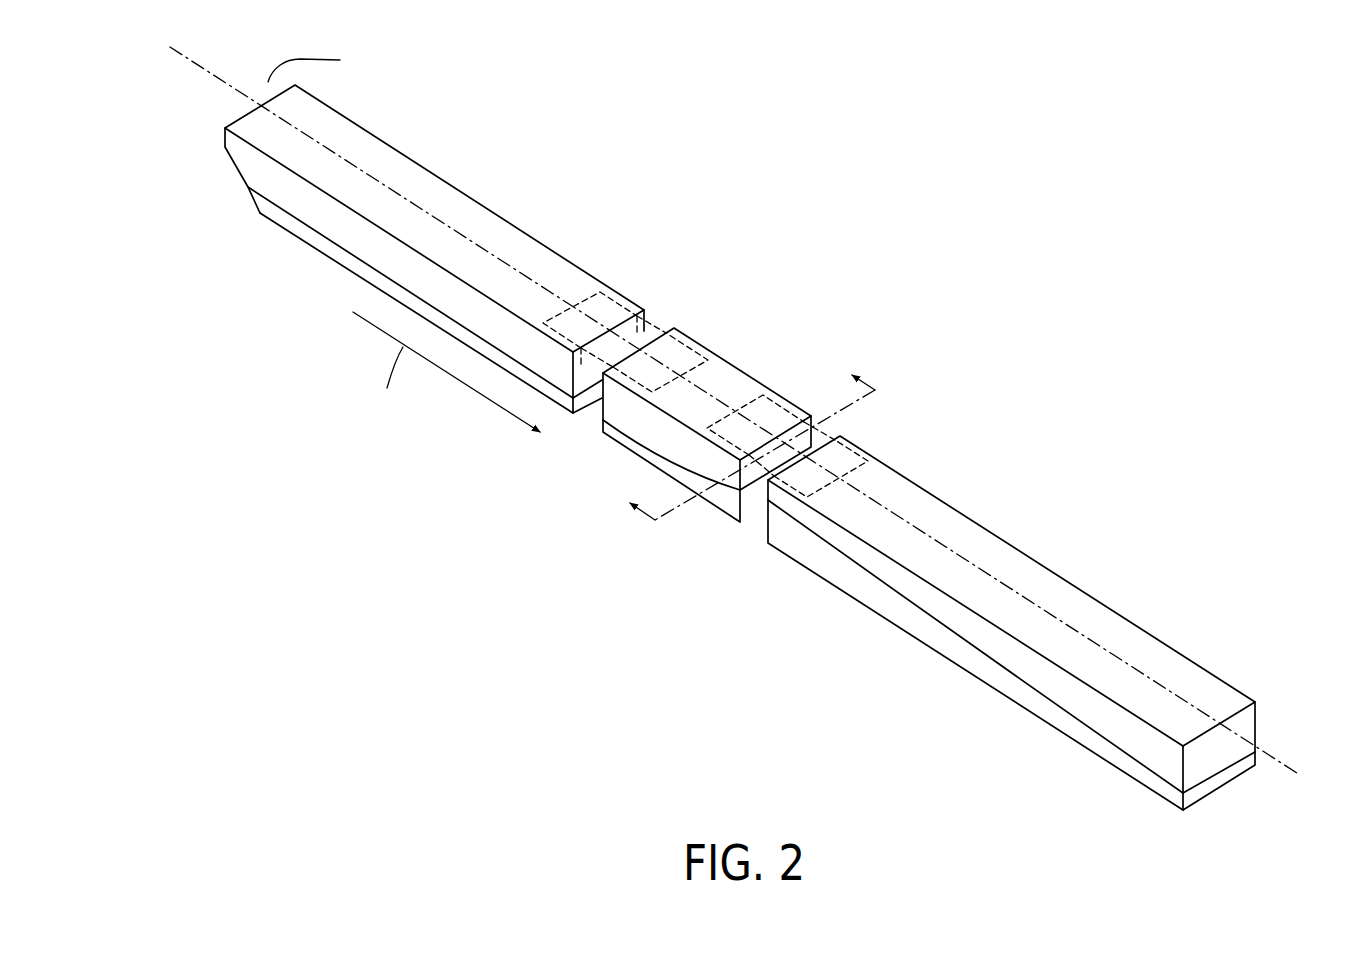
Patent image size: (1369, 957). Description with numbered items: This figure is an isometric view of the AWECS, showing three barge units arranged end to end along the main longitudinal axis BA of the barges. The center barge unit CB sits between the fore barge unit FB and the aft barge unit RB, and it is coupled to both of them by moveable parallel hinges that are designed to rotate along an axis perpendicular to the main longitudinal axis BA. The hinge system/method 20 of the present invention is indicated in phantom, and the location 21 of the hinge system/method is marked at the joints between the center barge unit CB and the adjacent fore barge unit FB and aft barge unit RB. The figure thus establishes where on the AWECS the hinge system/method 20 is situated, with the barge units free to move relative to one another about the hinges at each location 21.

The hinge system/method 20 is at (930, 313).
The location of the hinge system/method 21 is at (655, 320).
The fore barge unit FB is at (467, 193).
The center barge unit CB is at (735, 365).
The aft barge unit RB is at (1008, 535).
The main longitudinal axis BA is at (220, 82).